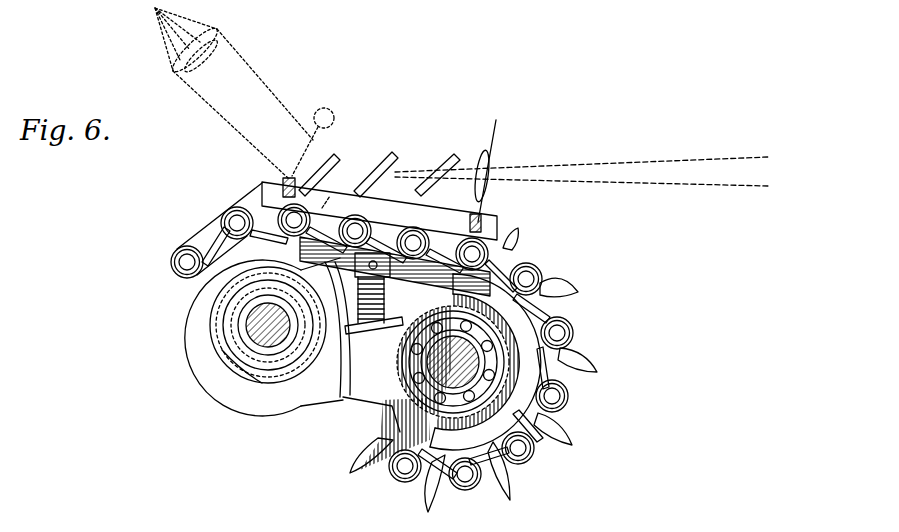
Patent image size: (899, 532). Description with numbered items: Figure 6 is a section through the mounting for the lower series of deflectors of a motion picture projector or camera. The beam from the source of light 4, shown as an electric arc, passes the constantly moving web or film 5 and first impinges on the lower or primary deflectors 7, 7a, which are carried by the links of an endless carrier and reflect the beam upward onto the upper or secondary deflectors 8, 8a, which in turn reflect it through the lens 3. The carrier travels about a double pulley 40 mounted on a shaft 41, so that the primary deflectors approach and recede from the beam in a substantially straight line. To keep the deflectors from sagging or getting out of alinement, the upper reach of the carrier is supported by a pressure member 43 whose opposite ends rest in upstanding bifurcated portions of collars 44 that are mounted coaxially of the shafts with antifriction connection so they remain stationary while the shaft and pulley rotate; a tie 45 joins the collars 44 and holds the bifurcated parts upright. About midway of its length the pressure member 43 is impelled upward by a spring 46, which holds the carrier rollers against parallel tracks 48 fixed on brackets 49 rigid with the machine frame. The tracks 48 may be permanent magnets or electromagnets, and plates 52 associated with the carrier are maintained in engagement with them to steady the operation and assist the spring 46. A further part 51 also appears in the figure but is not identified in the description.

The lens 3 is at (478, 172).
The source of light 4 is at (152, 12).
The film 5 is at (324, 106).
The primary deflector 7 is at (483, 148).
The primary deflector 7a is at (322, 205).
The secondary deflector 8 is at (381, 156).
The secondary deflector 8a is at (330, 160).
The double pulley 40 is at (184, 366).
The shaft 41 is at (275, 340).
The pressure member 43 is at (382, 288).
The collars 44 is at (232, 360).
The tie 45 is at (395, 330).
The spring 46 is at (338, 388).
The tracks 48 is at (500, 224).
The brackets 49 is at (285, 188).
The bearing 51 is at (440, 355).
The plates 52 is at (503, 252).